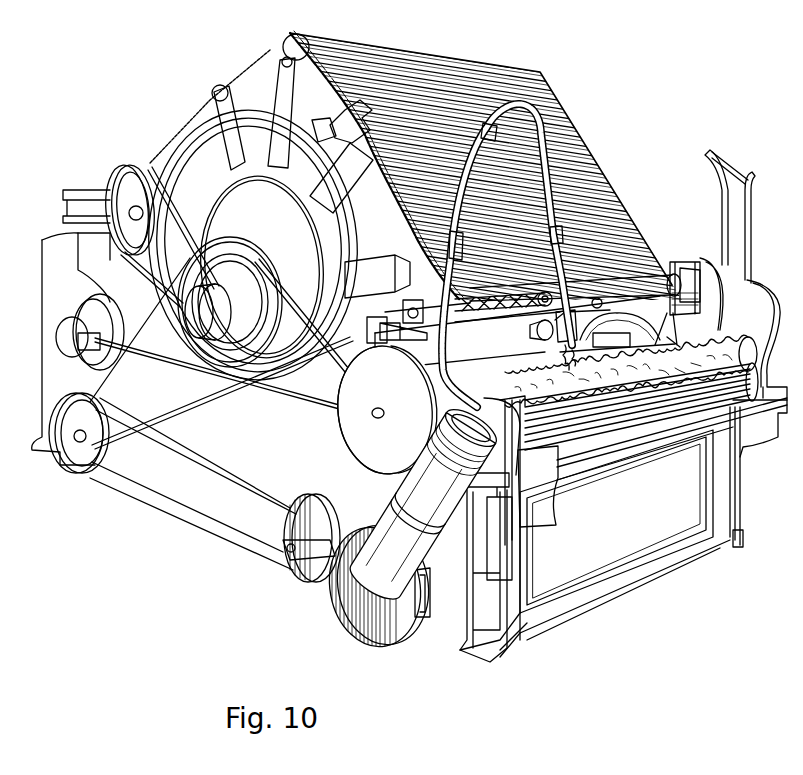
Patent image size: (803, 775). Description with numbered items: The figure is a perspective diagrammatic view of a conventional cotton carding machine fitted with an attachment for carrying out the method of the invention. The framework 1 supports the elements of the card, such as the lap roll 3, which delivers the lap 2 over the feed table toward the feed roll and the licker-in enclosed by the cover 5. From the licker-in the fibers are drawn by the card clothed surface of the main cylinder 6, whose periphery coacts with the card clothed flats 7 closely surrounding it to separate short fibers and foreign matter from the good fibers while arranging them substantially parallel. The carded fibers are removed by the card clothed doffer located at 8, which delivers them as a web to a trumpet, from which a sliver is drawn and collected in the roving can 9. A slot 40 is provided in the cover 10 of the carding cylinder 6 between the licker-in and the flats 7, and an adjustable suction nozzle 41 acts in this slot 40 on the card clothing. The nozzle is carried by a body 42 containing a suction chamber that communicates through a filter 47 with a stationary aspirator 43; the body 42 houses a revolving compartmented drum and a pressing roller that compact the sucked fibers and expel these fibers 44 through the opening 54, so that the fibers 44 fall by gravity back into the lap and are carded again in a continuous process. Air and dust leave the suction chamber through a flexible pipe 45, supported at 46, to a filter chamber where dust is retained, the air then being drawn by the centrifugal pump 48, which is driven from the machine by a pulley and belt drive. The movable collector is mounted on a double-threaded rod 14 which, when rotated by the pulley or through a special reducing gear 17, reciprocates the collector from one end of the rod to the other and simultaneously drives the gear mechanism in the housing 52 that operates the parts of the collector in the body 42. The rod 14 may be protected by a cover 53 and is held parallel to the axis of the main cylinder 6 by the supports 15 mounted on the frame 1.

The framework 1 is at (262, 455).
The lap 2 is at (631, 371).
The lap roll 3 is at (641, 406).
The cover 5 is at (498, 366).
The main cylinder 6 is at (351, 258).
The card clothed flats 7 is at (387, 236).
The doffer 8 is at (140, 324).
The roving can 9 is at (63, 300).
The cover 10 is at (408, 347).
The double-threaded rod 14 is at (495, 318).
The supports 15 is at (670, 304).
The reducing gear 17 is at (699, 265).
The slot 40 is at (481, 316).
The suction nozzle 41 is at (497, 333).
The body 42 is at (510, 332).
The stationary aspirator 43 is at (540, 340).
The fibers 44 is at (561, 357).
The flexible pipe 45 is at (585, 256).
The support 46 is at (550, 137).
The filter 47 is at (433, 468).
The centrifugal pump 48 is at (373, 633).
The housing 52 is at (594, 331).
The cover 53 is at (690, 270).
The opening 54 is at (611, 340).